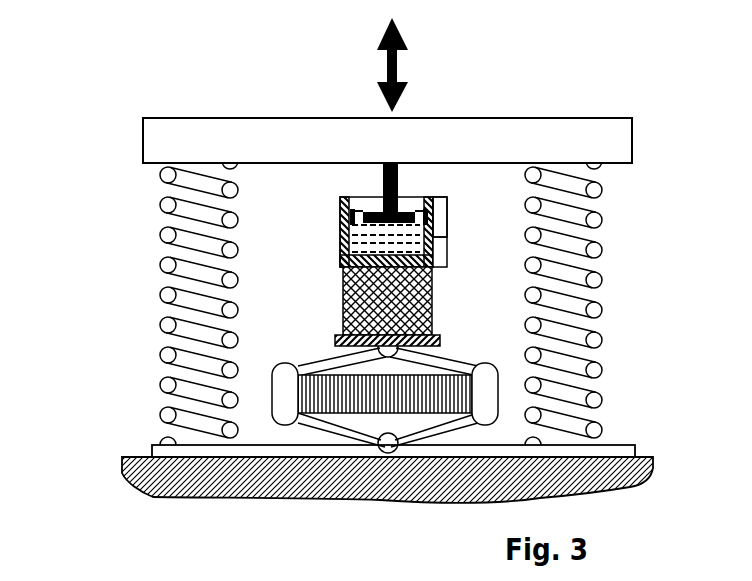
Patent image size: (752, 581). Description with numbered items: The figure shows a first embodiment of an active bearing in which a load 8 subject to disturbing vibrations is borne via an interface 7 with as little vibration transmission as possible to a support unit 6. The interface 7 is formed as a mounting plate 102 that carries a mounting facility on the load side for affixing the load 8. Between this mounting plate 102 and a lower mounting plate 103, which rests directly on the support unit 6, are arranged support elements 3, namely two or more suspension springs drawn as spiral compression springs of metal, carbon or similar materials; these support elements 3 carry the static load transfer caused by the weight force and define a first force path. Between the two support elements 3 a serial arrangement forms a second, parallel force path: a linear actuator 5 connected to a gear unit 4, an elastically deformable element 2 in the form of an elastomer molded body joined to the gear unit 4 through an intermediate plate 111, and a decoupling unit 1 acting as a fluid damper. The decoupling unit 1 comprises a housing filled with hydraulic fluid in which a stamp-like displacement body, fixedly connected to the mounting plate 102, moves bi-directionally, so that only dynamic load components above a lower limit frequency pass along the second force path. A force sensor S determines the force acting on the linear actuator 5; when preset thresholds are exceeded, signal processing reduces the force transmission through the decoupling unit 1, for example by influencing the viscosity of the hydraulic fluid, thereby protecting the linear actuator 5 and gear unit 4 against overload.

The decoupling unit 1 is at (347, 235).
The elastically deformable element 2 is at (433, 290).
The support elements 3 is at (160, 318).
The gear unit 4 is at (447, 358).
The linear actuator 5 is at (362, 415).
The support unit 6 is at (152, 497).
The interface 7 is at (142, 113).
The load 8 is at (404, 65).
The mounting plate 102 is at (387, 140).
The lower mounting plate 103 is at (630, 442).
The intermediate plate 111 is at (333, 332).
The force sensor S is at (448, 252).